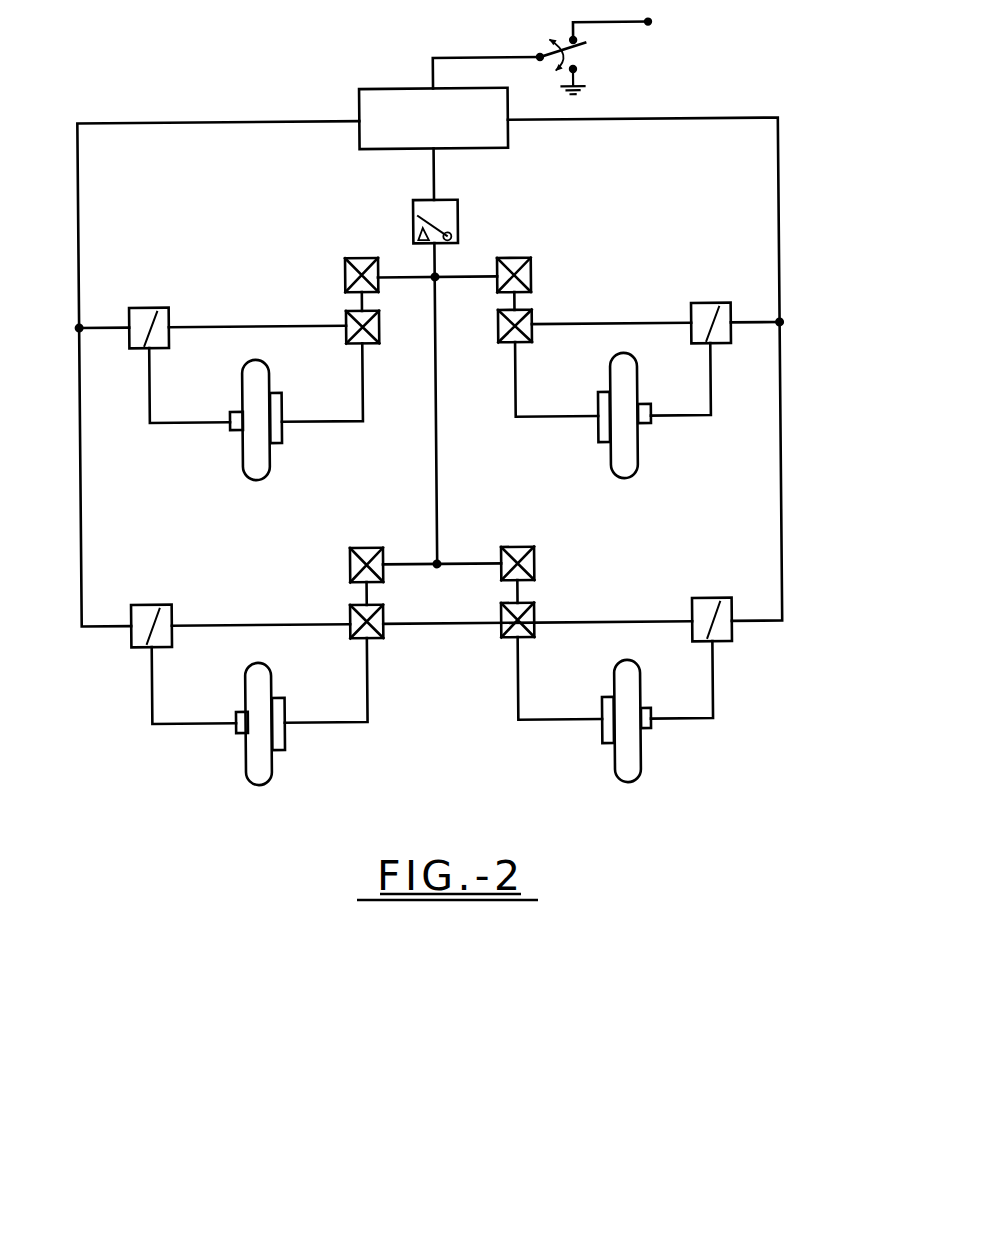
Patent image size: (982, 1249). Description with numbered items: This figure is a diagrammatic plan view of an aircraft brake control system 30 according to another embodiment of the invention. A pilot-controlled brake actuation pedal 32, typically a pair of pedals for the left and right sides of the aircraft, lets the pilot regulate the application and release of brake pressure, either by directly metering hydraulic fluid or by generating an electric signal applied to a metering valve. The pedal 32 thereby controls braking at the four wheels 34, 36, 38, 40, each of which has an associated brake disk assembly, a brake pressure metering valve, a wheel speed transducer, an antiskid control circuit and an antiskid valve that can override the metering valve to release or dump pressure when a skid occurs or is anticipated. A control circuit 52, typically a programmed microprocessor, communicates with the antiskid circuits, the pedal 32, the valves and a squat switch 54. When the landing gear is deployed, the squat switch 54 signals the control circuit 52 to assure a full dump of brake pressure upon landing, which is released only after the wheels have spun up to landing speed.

The brake control system 30 is at (237, 110).
The pilot-controlled brake actuation pedal 32 is at (411, 210).
The wheel 34 is at (244, 460).
The wheel 36 is at (639, 462).
The wheel 38 is at (243, 770).
The wheel 40 is at (611, 773).
The control circuit 52 is at (359, 91).
The squat switch 54 is at (593, 56).